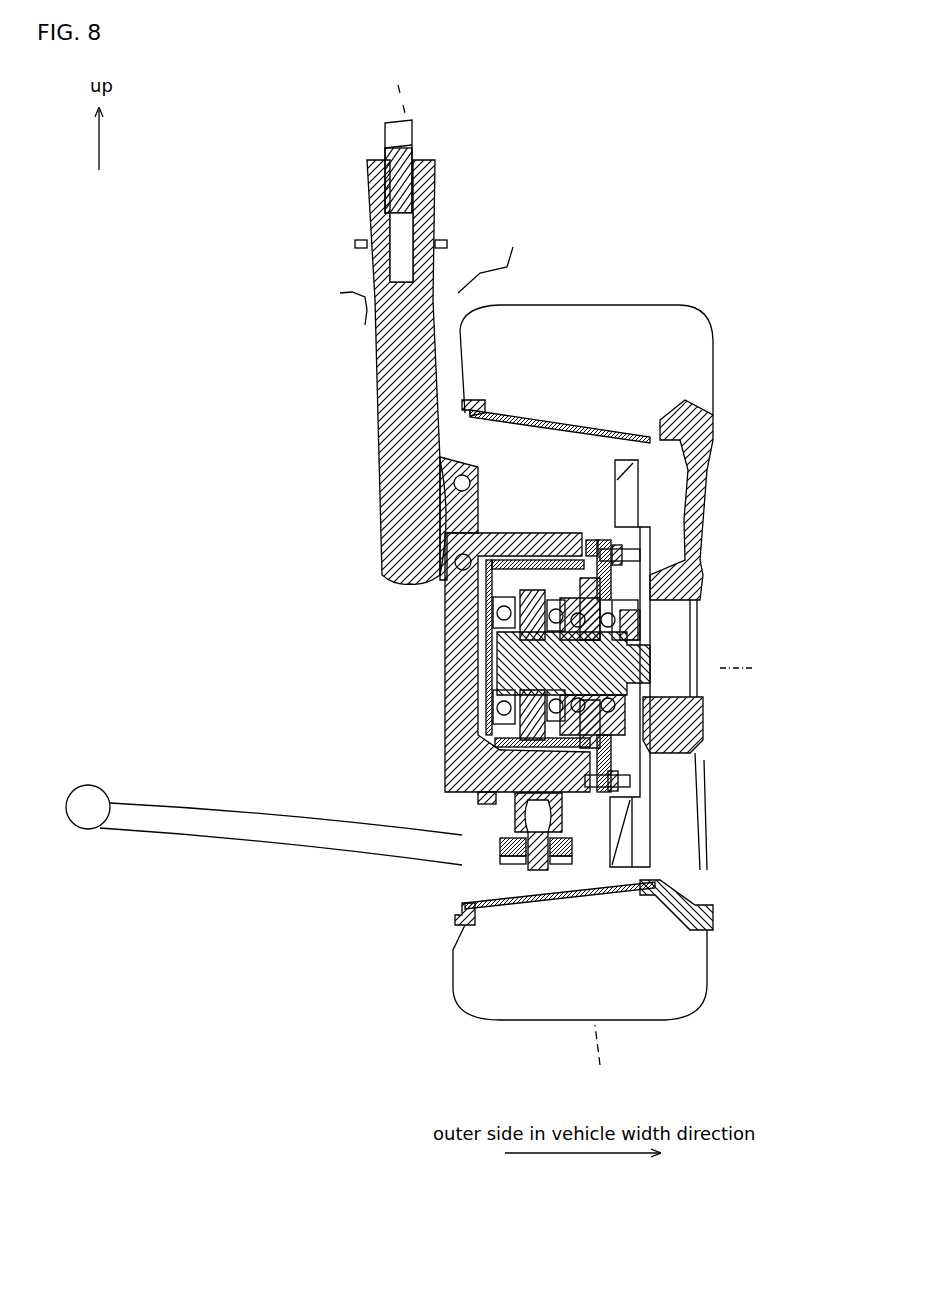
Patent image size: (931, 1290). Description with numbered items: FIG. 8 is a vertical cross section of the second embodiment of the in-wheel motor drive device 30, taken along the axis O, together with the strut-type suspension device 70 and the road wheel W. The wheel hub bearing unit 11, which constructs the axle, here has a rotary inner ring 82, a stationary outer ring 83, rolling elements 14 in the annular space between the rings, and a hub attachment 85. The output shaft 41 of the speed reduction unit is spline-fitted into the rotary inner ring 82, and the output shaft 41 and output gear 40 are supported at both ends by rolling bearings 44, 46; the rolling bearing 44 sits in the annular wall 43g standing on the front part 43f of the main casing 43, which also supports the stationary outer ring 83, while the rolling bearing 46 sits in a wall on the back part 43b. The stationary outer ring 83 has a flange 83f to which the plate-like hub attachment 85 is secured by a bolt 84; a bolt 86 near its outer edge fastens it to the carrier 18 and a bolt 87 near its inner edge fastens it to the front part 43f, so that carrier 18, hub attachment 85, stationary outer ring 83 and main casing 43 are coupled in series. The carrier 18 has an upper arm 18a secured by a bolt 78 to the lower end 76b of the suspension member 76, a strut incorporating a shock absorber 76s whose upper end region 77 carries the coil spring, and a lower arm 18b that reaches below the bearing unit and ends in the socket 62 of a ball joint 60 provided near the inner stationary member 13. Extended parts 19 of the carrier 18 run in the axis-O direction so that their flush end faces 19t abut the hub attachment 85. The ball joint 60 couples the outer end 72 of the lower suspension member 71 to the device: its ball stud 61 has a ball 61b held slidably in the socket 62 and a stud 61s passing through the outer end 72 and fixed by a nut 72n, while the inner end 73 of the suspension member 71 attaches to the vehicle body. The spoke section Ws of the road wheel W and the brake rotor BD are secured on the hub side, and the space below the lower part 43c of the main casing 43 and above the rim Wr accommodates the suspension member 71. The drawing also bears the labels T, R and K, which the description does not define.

The upper end region 77 is at (412, 136).
The suspension device 70 is at (392, 372).
The suspension member 76 is at (383, 400).
The shock absorber 76s is at (402, 262).
The lower end 76b is at (385, 540).
The bolt 78 is at (454, 480).
The upper arm 18a is at (452, 485).
The carrier 18 is at (444, 645).
The lower arm 18b is at (485, 794).
The in-wheel motor drive device 30 is at (515, 558).
The extended part 19 is at (530, 556).
The end face 19t is at (600, 538).
The main casing 43 is at (545, 598).
The annular wall 43g is at (572, 598).
The back part 43b is at (500, 604).
The lower part 43c is at (500, 765).
The front part 43f is at (612, 560).
The rolling elements 14 is at (592, 578).
The output shaft 41 is at (540, 660).
The rolling bearing 44 is at (510, 685).
The rolling bearing 46 is at (500, 710).
The output gear 40 is at (500, 745).
The inner stationary member 13 is at (652, 656).
The axis O is at (747, 666).
The wheel hub bearing unit 11 is at (690, 675).
The hub attachment 85 is at (625, 556).
The bolt 86 is at (600, 556).
The bolt 87 is at (645, 590).
The stationary outer ring 83 is at (640, 600).
The flange 83f is at (645, 758).
The bolt 84 is at (640, 775).
The rotary inner ring 82 is at (645, 640).
The brake rotor BD is at (640, 830).
The road wheel W is at (716, 413).
The spoke section Ws is at (702, 458).
The rim Wr is at (700, 870).
The tire T is at (655, 303).
The tire radius R is at (600, 1022).
The kingpin axis K is at (603, 1056).
The suspension member 71 is at (300, 860).
The inner end 73 is at (88, 818).
The ball joint 60 is at (495, 827).
The socket 62 is at (555, 825).
The ball stud 61 is at (461, 881).
The ball 61b is at (500, 845).
The stud 61s is at (548, 868).
The outer end 72 is at (565, 850).
The nut 72n is at (545, 870).